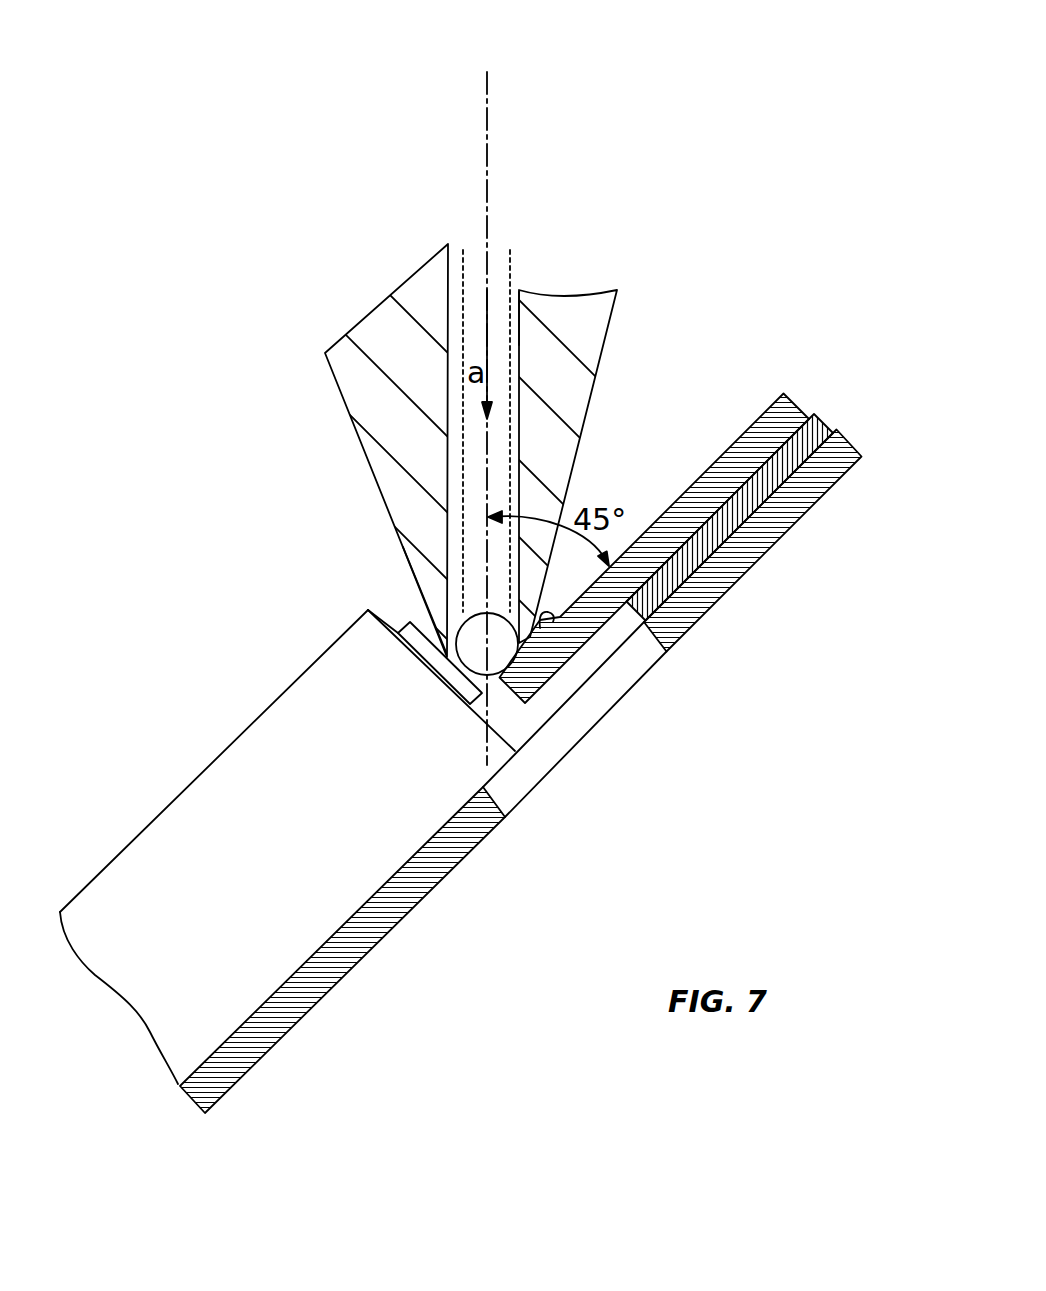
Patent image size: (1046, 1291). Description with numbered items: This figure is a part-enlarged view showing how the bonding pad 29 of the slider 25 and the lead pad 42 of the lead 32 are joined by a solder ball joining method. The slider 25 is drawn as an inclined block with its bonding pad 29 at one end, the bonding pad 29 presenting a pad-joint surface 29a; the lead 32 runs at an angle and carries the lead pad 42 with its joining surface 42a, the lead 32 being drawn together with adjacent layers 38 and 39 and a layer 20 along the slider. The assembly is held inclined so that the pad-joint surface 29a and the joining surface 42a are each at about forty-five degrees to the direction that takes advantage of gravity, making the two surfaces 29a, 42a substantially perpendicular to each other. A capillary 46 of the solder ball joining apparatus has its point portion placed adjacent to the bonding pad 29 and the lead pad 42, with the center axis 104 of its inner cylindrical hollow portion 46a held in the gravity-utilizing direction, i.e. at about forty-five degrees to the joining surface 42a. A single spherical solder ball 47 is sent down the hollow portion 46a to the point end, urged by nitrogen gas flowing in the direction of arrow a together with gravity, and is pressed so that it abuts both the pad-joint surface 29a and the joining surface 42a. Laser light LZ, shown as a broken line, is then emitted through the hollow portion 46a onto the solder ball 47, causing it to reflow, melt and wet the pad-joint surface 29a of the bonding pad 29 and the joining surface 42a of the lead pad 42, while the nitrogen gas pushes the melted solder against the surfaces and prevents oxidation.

The center axis 104 is at (488, 122).
The capillary 46 is at (372, 333).
The inner cylindrical hollow portion 46a is at (511, 340).
The laser light LZ is at (513, 268).
The solder ball 47 is at (470, 637).
The slider 25 is at (190, 815).
The bonding pad 29 is at (410, 628).
The pad-joint surface 29a is at (461, 671).
The first sheet 20 is at (376, 936).
The lead pad 42 is at (595, 617).
The joining surface 42a is at (535, 647).
The lead 32 is at (720, 460).
The intermediate layer 38 is at (812, 421).
The third sheet 39 is at (758, 552).